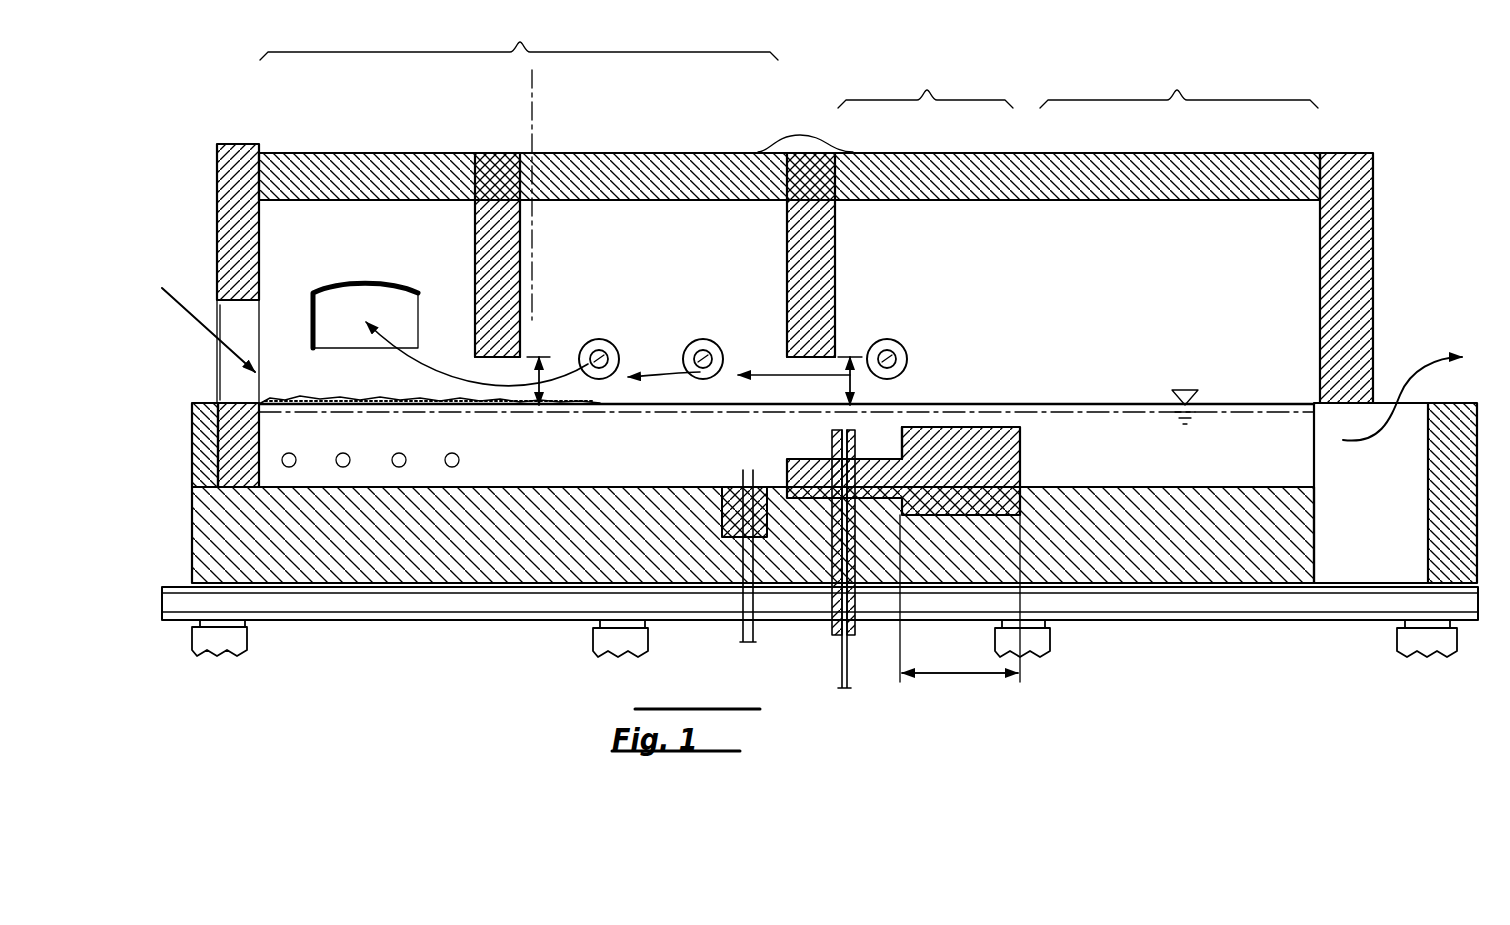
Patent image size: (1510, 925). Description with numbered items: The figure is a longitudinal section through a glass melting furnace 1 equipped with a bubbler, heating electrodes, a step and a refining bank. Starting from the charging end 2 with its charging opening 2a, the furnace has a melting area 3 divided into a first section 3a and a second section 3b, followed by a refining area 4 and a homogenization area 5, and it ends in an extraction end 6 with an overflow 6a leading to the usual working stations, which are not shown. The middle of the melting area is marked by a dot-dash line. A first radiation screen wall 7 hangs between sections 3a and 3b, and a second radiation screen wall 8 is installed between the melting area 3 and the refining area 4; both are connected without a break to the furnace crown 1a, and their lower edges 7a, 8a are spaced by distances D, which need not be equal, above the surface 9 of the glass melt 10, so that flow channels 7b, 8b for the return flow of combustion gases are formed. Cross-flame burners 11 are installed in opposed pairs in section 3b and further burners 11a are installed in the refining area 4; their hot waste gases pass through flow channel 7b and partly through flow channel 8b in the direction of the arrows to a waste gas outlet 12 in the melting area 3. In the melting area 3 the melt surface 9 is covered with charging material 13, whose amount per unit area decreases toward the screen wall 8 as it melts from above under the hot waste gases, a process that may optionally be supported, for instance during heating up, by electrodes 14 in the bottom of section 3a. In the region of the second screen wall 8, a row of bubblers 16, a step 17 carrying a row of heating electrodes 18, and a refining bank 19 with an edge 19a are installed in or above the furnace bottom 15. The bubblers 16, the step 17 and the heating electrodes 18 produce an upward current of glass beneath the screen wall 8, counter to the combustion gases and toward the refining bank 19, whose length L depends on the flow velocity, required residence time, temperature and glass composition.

The glass melting furnace 1 is at (1393, 203).
The furnace crown 1a is at (805, 123).
The charging end 2 is at (231, 124).
The charging opening 2a is at (246, 323).
The melting area 3 is at (532, 30).
The first section of melting area 3a is at (372, 246).
The second section of melting area 3b is at (654, 246).
The refining area 4 is at (932, 76).
The homogenization area 5 is at (1187, 76).
The extraction end 6 is at (1425, 300).
The overflow 6a is at (1363, 414).
The first radiation screen wall 7 is at (520, 296).
The lower edge of first radiation screen wall 7a is at (485, 366).
The flow channel 7b is at (502, 388).
The second radiation screen wall 8 is at (827, 270).
The lower edge of second radiation screen wall 8a is at (800, 367).
The flow channel 8b is at (806, 388).
The surface of the glass melt 9 is at (1185, 387).
The glass melt 10 is at (666, 466).
The cross-flame burners 11 is at (682, 344).
The burners 11a is at (897, 340).
The waste gas outlet 12 is at (390, 302).
The charging material 13 is at (293, 392).
The electrodes 14 is at (394, 453).
The furnace bottom 15 is at (520, 587).
The bubblers 16 is at (742, 478).
The step 17 is at (787, 476).
The heating electrodes 18 is at (840, 662).
The refining bank 19 is at (967, 425).
The weir edge 19a is at (905, 425).